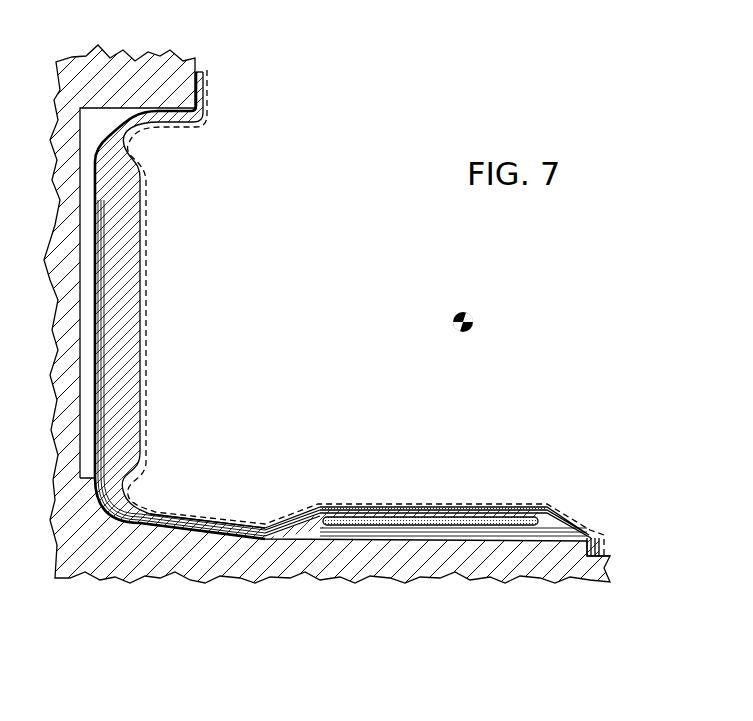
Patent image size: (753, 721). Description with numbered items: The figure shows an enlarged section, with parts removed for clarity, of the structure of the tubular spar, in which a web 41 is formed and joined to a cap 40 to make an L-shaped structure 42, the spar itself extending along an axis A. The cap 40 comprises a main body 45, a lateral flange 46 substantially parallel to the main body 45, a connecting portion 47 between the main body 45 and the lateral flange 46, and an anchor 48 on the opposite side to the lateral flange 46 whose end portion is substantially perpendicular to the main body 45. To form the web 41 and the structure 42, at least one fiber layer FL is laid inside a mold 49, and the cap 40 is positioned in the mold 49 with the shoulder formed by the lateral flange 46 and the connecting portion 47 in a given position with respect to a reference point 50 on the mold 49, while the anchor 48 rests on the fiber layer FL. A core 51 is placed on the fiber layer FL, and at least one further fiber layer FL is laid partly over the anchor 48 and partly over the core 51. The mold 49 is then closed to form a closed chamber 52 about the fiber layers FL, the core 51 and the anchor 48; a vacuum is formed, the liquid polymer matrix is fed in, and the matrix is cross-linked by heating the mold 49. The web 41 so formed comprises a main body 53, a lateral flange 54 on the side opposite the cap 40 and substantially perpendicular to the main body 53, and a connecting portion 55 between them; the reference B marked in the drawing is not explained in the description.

The cap 40 is at (175, 267).
The web 41 is at (381, 474).
The L-shaped structure 42 is at (356, 316).
The main body 45 is at (117, 343).
The lateral flange 46 is at (208, 88).
The connecting portion 47 is at (174, 116).
The anchor 48 is at (153, 506).
The mold 49 is at (212, 560).
The reference point 50 is at (190, 43).
The core 51 is at (432, 505).
The closed chamber 52 is at (150, 468).
The main body 53 is at (312, 512).
The lateral flange 54 is at (606, 554).
The connecting portion 55 is at (598, 535).
The axis A is at (475, 318).
The axis B is at (540, 503).
The fiber layer FL is at (298, 519).